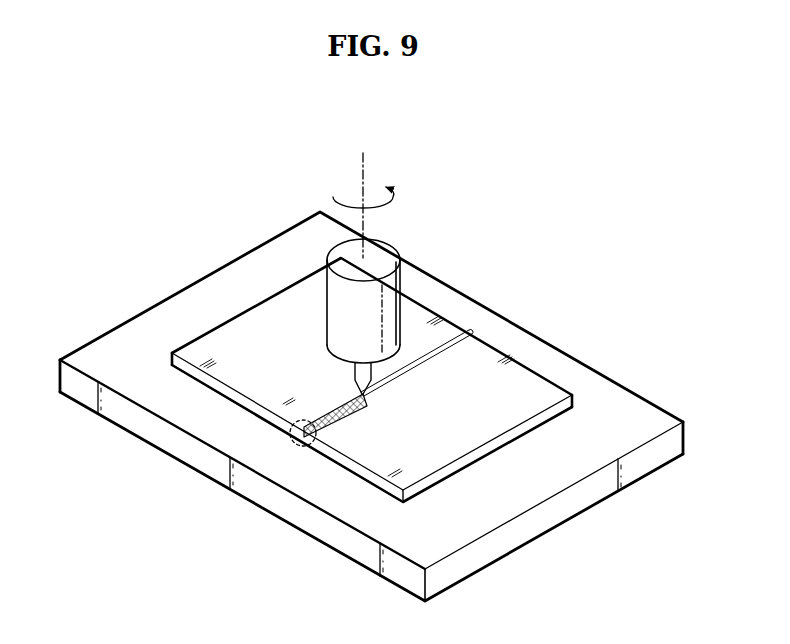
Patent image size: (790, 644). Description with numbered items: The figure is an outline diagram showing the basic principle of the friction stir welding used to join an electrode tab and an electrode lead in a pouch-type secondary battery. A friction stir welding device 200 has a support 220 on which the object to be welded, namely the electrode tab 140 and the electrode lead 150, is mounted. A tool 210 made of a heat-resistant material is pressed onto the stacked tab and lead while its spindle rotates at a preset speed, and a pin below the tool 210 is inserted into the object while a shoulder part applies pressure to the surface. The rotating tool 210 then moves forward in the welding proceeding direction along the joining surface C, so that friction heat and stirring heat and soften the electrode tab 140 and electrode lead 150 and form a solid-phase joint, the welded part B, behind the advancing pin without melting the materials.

The friction stir welding device 200 is at (178, 182).
The support 220 is at (355, 548).
The electrode lead 150 is at (208, 338).
The electrode tab 140 is at (538, 388).
The tool 210 is at (391, 259).
The joining surface C is at (445, 350).
The welded part B is at (292, 441).